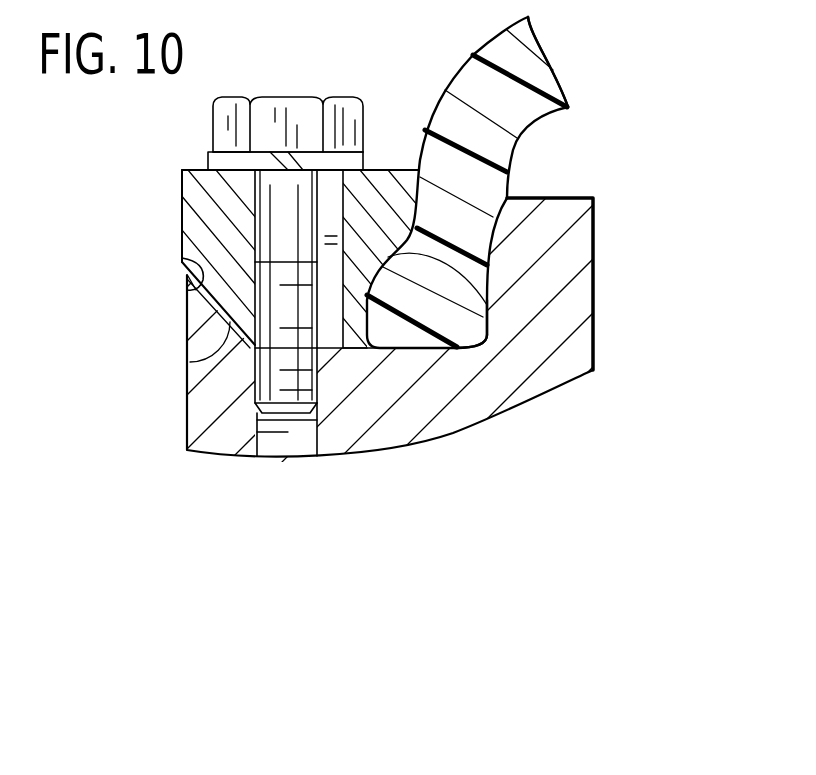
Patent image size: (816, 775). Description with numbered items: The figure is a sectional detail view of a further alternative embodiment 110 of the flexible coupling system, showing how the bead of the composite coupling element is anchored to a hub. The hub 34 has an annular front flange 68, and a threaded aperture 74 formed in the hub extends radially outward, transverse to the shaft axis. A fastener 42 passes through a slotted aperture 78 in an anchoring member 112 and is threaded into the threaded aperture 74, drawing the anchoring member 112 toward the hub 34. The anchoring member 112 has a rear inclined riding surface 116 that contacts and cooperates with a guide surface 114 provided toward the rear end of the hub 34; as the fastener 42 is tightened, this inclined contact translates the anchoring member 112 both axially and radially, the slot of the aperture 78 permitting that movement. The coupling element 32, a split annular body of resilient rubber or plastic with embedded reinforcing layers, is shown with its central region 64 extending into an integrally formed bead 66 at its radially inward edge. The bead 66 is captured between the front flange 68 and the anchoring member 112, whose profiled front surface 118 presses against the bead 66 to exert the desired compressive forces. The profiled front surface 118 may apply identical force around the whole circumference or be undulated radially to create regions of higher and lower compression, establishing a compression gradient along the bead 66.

The coupling element 32 is at (528, 147).
The hub 34 is at (593, 352).
The fastener 42 is at (313, 110).
The central region 64 is at (551, 78).
The bead 66 is at (473, 327).
The front flange 68 is at (568, 218).
The threaded aperture 74 is at (287, 443).
The slotted aperture 78 is at (333, 208).
The alternative embodiment 110 is at (168, 322).
The anchoring member 112 is at (178, 198).
The guide surface 114 is at (187, 362).
The rear inclined riding surface 116 is at (180, 260).
The profiled front surface 118 is at (490, 298).